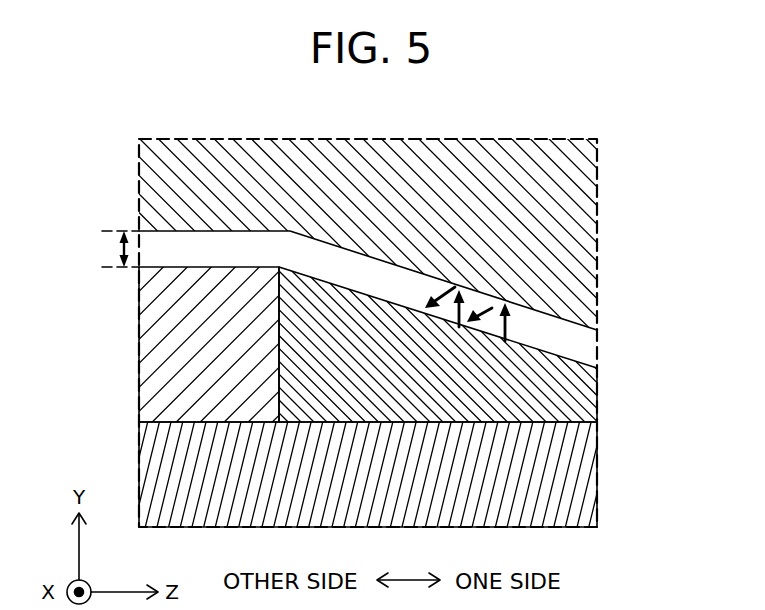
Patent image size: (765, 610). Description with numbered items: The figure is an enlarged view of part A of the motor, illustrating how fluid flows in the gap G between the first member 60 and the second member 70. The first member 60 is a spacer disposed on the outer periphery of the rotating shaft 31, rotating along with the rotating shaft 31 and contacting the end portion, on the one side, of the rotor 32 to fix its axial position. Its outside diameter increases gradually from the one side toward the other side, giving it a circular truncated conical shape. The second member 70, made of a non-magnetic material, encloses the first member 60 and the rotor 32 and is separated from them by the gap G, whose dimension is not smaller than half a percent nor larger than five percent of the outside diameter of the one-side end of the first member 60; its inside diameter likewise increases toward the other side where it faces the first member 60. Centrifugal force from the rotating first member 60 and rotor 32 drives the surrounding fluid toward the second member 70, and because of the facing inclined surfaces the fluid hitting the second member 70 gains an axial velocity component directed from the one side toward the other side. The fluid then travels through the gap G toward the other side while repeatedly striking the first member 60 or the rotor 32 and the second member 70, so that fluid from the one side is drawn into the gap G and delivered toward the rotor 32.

The second member 70 is at (578, 216).
The first member 60 is at (580, 388).
The rotor 32 is at (160, 352).
The rotating shaft 31 is at (585, 487).
The gap G is at (122, 250).
The part A is at (597, 139).